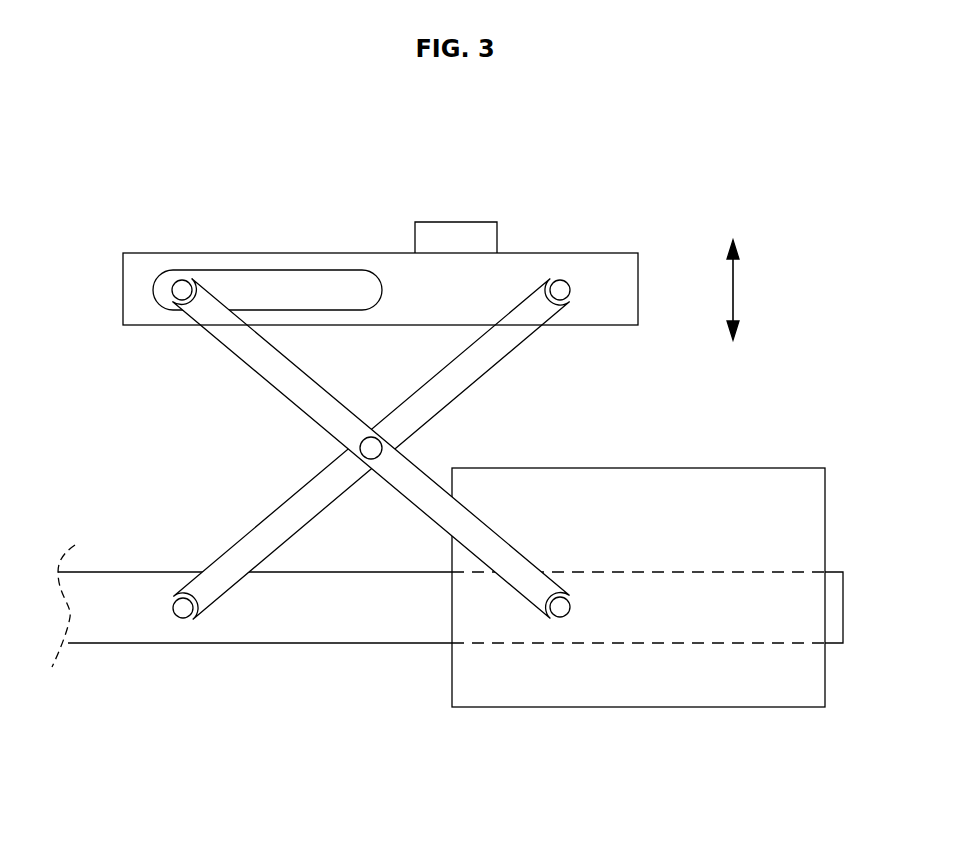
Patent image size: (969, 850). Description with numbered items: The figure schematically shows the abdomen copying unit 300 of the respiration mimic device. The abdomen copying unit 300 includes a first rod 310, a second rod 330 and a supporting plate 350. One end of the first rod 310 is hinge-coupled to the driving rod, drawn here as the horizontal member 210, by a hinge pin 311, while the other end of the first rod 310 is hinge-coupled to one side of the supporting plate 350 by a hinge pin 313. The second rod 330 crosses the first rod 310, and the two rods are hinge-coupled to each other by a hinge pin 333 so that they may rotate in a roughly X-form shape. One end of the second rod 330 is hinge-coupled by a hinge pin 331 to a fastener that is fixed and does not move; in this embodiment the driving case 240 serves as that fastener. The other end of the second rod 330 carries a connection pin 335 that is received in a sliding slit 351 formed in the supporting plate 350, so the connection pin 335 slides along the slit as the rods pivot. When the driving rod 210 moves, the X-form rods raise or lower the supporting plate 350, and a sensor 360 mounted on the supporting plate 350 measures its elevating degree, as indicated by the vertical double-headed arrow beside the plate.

The abdomen copying unit 300 is at (866, 160).
The base bar / rail 210 is at (332, 643).
The driving case 240 is at (740, 468).
The supporting plate 350 is at (585, 253).
The sliding slit 351 is at (265, 267).
The sensor 360 is at (457, 220).
The first rod 310 is at (243, 530).
The second rod 330 is at (275, 343).
The hinge pin 311 is at (183, 610).
The hinge pin 313 is at (560, 290).
The hinge pin 331 is at (560, 607).
The hinge pin 333 is at (371, 448).
The connection pin 335 is at (182, 290).